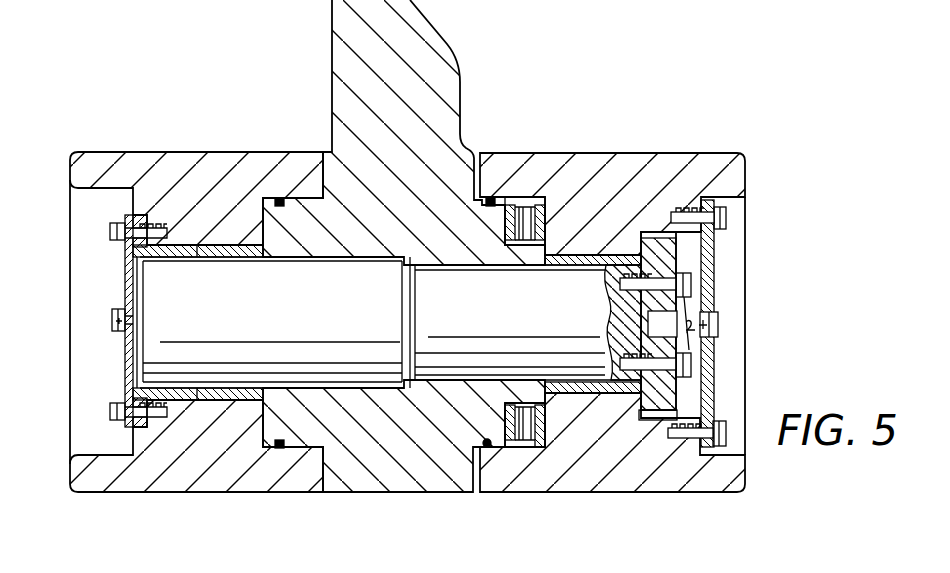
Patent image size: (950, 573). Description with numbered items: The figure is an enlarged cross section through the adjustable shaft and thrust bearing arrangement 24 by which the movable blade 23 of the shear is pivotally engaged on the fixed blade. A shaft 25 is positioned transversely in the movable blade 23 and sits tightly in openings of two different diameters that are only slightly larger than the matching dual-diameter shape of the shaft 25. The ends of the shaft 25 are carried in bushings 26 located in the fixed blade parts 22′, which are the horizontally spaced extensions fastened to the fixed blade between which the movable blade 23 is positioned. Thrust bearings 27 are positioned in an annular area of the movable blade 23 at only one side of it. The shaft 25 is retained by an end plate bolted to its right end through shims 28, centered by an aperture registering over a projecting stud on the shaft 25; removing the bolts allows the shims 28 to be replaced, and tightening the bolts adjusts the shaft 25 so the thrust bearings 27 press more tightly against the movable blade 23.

The fixed blade parts 22′ is at (237, 150).
The movable blade 23 is at (448, 83).
The adjustable shaft and thrust bearing arrangement 24 is at (78, 218).
The shaft 25 is at (326, 323).
The bushings 26 is at (237, 257).
The thrust bearings 27 is at (522, 213).
The shims 28 is at (648, 350).